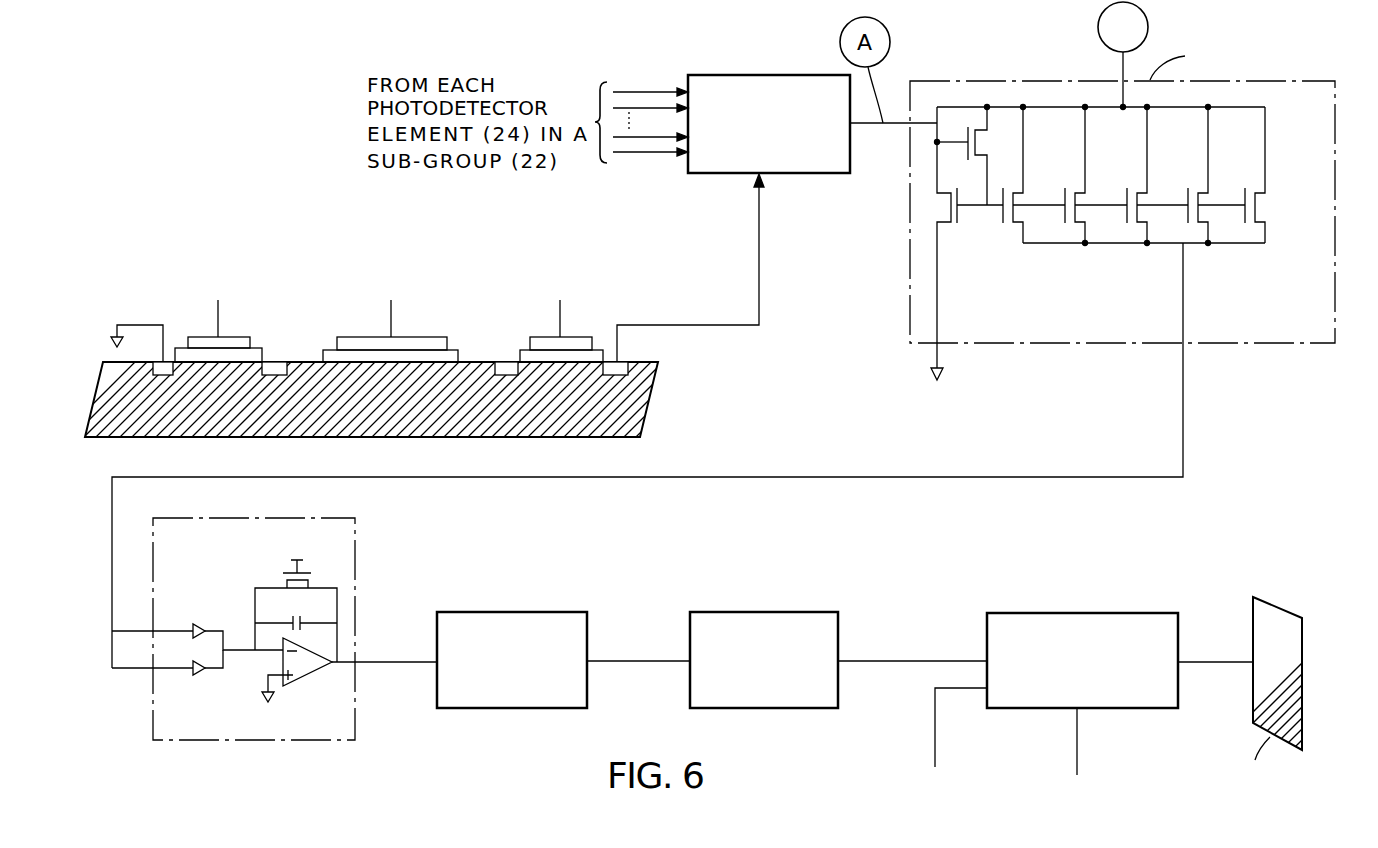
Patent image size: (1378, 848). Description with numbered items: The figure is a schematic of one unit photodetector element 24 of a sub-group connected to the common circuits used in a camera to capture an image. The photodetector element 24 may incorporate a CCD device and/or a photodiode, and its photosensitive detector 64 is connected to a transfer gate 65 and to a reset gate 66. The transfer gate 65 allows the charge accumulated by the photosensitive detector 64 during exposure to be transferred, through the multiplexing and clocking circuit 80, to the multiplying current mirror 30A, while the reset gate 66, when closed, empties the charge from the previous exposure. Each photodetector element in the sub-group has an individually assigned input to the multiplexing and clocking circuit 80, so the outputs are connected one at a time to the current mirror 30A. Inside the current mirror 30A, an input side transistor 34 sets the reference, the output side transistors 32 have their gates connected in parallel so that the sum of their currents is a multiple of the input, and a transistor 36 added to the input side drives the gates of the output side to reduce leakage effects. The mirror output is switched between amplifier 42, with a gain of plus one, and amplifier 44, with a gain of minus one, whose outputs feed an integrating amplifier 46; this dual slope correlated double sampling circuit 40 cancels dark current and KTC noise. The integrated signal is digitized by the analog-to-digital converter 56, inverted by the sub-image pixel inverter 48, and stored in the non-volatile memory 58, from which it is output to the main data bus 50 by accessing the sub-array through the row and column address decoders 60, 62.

The multiplexing and clocking circuit 80 is at (756, 75).
The transistor 36 is at (982, 125).
The input side transistor 34 is at (943, 222).
The transistors 32 is at (1022, 200).
The current mirror 30A is at (1257, 345).
The photodetector element 24 is at (662, 408).
The reset gate 66 is at (218, 320).
The photosensitive detector 64 is at (391, 320).
The transfer gate 65 is at (560, 320).
The correlated double sampling circuit 40 is at (343, 518).
The amplifier 42 is at (192, 626).
The amplifier 44 is at (192, 672).
The integrating amplifier 46 is at (308, 678).
The analog-to-digital converter 56 is at (537, 612).
The sub-image pixel inverter 48 is at (785, 612).
The non-volatile memory 58 is at (1085, 613).
The column address decoder 62 is at (937, 750).
The row address decoder 60 is at (1079, 750).
The main data bus 50 is at (1283, 603).